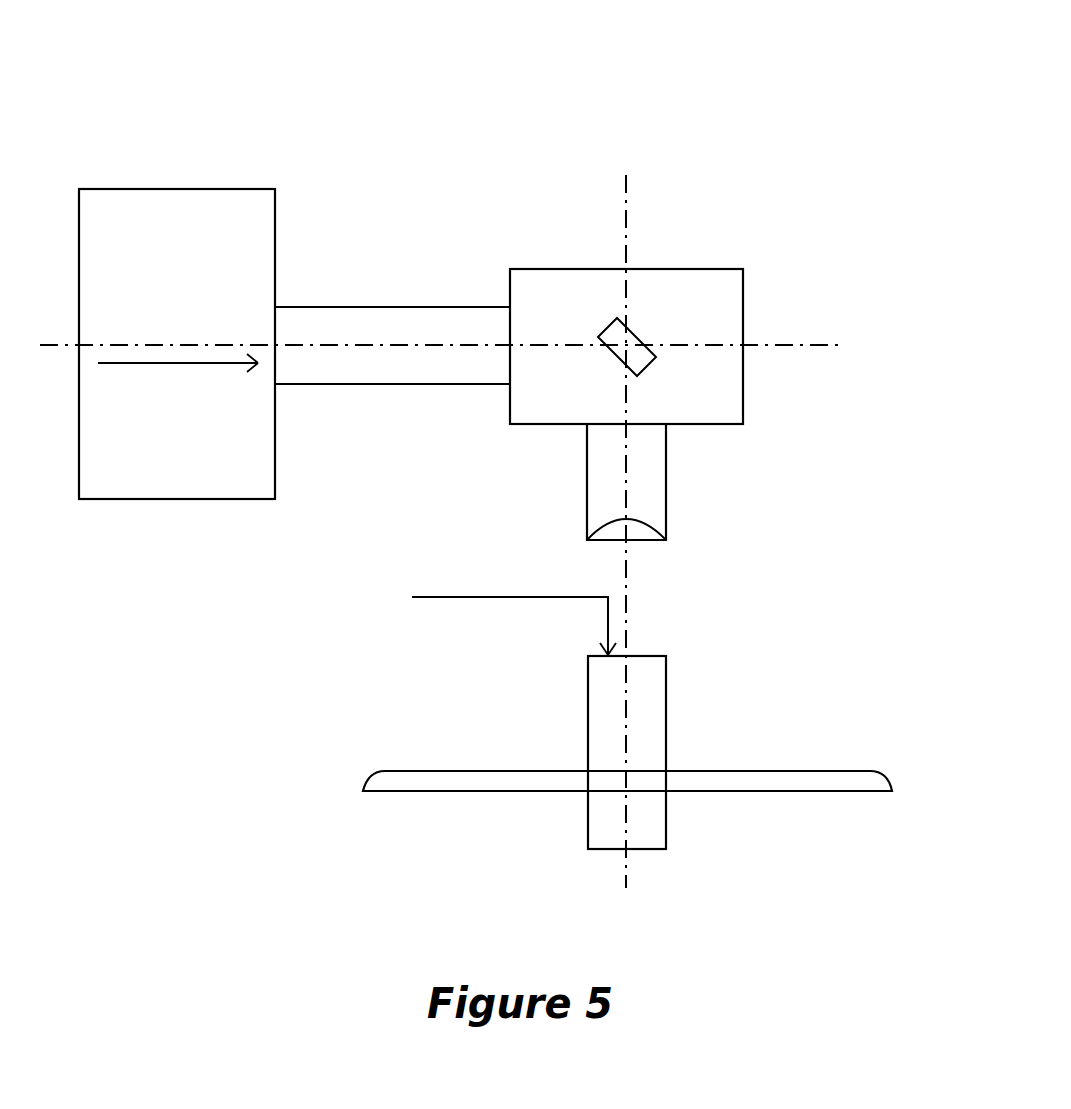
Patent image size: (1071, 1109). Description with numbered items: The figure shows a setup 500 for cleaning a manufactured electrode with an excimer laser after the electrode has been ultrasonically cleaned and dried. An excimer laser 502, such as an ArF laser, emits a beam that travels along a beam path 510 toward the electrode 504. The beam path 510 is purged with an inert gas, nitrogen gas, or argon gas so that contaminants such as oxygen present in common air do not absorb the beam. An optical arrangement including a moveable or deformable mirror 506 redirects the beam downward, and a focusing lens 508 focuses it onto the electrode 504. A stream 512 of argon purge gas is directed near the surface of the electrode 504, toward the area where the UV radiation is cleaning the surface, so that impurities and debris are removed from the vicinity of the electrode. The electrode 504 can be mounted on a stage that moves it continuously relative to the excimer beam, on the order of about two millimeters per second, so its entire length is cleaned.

The setup 500 is at (767, 92).
The excimer laser 502 is at (177, 189).
The electrode 504 is at (763, 783).
The mirror 506 is at (637, 347).
The focusing lens 508 is at (637, 532).
The beam path 510 is at (353, 327).
The stream of argon purge gas 512 is at (468, 597).